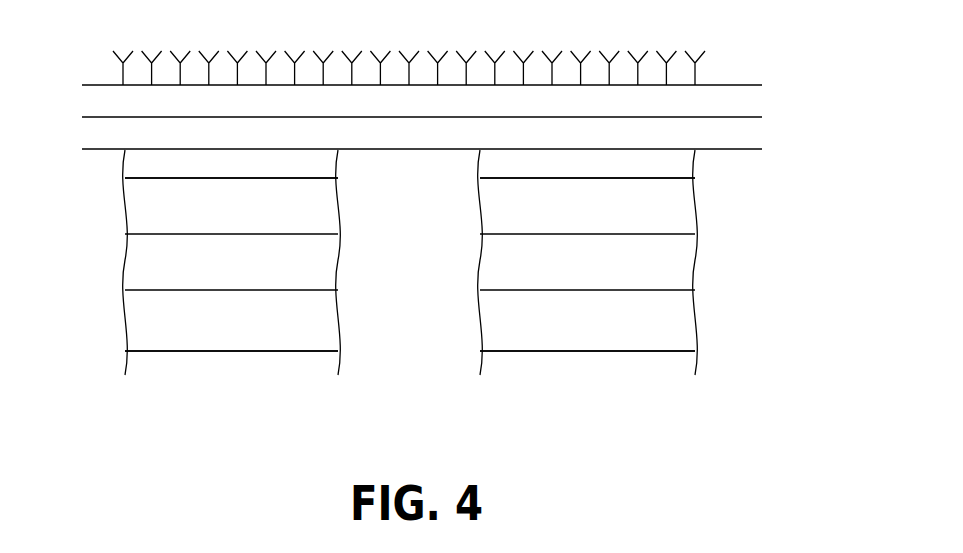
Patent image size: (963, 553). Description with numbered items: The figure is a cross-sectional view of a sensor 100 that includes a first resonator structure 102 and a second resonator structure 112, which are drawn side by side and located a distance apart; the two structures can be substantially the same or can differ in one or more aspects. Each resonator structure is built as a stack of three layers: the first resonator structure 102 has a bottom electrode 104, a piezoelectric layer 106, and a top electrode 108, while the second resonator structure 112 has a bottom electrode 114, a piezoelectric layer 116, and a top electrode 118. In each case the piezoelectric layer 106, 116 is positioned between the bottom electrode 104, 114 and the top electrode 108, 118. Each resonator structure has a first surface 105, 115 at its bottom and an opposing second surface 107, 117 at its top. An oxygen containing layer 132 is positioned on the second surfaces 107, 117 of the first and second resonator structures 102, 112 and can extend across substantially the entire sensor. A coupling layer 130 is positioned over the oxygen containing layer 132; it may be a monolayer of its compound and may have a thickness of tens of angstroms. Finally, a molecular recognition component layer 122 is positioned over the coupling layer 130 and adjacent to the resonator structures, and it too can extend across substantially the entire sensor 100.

The sensor 100 is at (855, 127).
The first resonator structure 102 is at (177, 251).
The bottom electrode 104 is at (244, 326).
The first surface 105 is at (219, 384).
The piezoelectric layer 106 is at (244, 271).
The second surface 107 is at (149, 166).
The top electrode 108 is at (244, 214).
The second resonator structure 112 is at (644, 234).
The bottom electrode 114 is at (601, 326).
The first surface 115 is at (601, 384).
The piezoelectric layer 116 is at (601, 271).
The second surface 117 is at (669, 159).
The top electrode 118 is at (601, 214).
The molecular recognition component layer 122 is at (100, 45).
The coupling layer 130 is at (393, 109).
The oxygen containing layer 132 is at (456, 140).